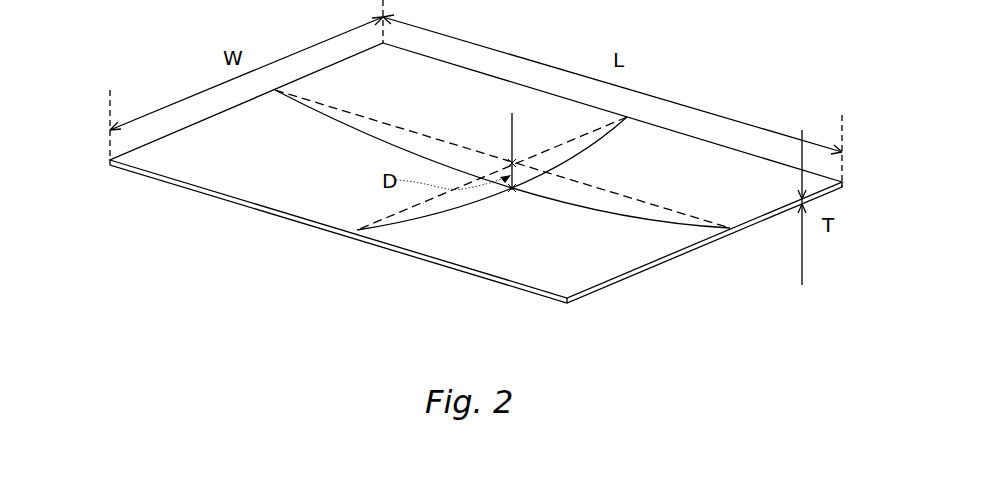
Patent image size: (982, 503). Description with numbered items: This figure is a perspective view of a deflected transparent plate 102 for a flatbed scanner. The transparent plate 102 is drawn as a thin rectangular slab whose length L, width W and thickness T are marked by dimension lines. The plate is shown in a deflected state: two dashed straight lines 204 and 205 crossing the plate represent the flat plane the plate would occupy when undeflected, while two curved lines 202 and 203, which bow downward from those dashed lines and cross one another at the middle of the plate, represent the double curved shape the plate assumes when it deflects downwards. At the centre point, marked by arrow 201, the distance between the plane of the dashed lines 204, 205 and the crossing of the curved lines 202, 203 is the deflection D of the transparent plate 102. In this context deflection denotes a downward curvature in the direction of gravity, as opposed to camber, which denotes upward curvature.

The transparent plate 102 is at (243, 205).
The arrow 201 is at (512, 113).
The curved line 202 is at (347, 130).
The curved line 203 is at (458, 213).
The dashed straight line 204 is at (597, 187).
The dashed straight line 205 is at (393, 210).